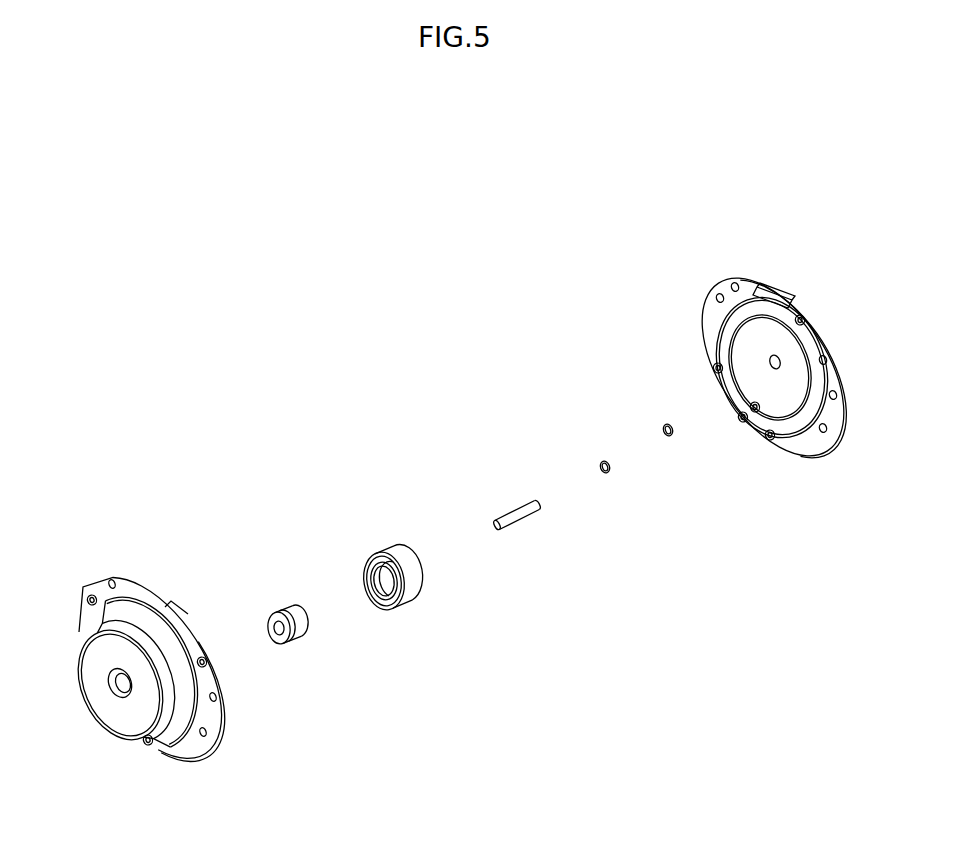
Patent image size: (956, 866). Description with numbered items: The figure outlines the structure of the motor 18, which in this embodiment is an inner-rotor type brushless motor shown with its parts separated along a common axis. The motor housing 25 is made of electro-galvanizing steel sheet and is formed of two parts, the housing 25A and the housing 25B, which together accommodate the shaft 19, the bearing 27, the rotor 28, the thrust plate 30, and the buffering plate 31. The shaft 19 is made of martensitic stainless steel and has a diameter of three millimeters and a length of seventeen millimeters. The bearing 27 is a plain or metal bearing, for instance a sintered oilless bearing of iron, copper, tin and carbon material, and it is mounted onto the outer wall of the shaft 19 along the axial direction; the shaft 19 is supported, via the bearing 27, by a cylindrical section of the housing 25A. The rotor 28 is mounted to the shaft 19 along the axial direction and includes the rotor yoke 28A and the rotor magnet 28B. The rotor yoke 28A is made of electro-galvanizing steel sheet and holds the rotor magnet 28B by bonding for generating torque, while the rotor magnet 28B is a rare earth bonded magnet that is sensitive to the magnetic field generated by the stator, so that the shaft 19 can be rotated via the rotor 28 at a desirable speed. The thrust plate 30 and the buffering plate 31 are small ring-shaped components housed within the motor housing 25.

The motor 18 is at (767, 223).
The shaft 19 is at (520, 513).
The motor housing 25 is at (697, 773).
The housing 25A is at (187, 713).
The housing 25B is at (808, 442).
The bearing 27 is at (300, 625).
The rotor 28 is at (387, 542).
The rotor yoke 28A is at (378, 580).
The rotor magnet 28B is at (417, 587).
The thrust plate 30 is at (607, 472).
The buffering plate 31 is at (670, 435).